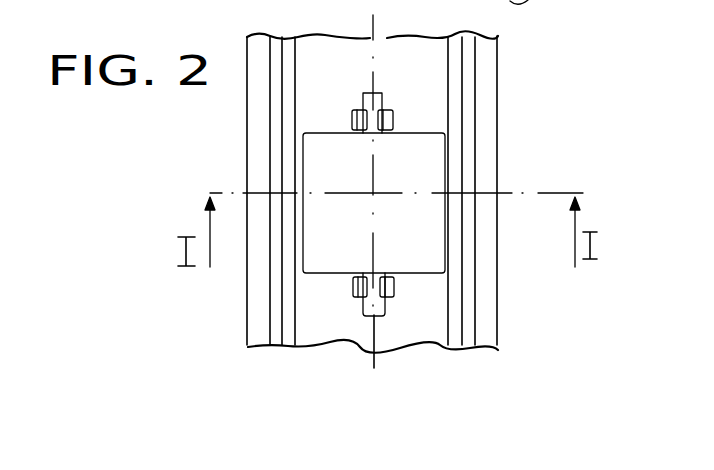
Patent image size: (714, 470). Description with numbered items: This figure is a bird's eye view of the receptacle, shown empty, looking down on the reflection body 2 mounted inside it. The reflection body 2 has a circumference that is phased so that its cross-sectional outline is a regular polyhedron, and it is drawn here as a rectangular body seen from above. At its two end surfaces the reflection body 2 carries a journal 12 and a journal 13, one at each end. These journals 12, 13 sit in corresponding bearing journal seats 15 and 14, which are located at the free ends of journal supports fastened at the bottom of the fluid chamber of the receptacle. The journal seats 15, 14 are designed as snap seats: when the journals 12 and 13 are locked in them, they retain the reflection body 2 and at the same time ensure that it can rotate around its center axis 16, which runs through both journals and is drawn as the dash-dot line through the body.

The reflection body 2 is at (437, 160).
The journal 12 is at (385, 107).
The journal 13 is at (367, 317).
The bearing journal seat 14 is at (394, 292).
The bearing journal seat 15 is at (355, 122).
The center axis 16 is at (377, 366).